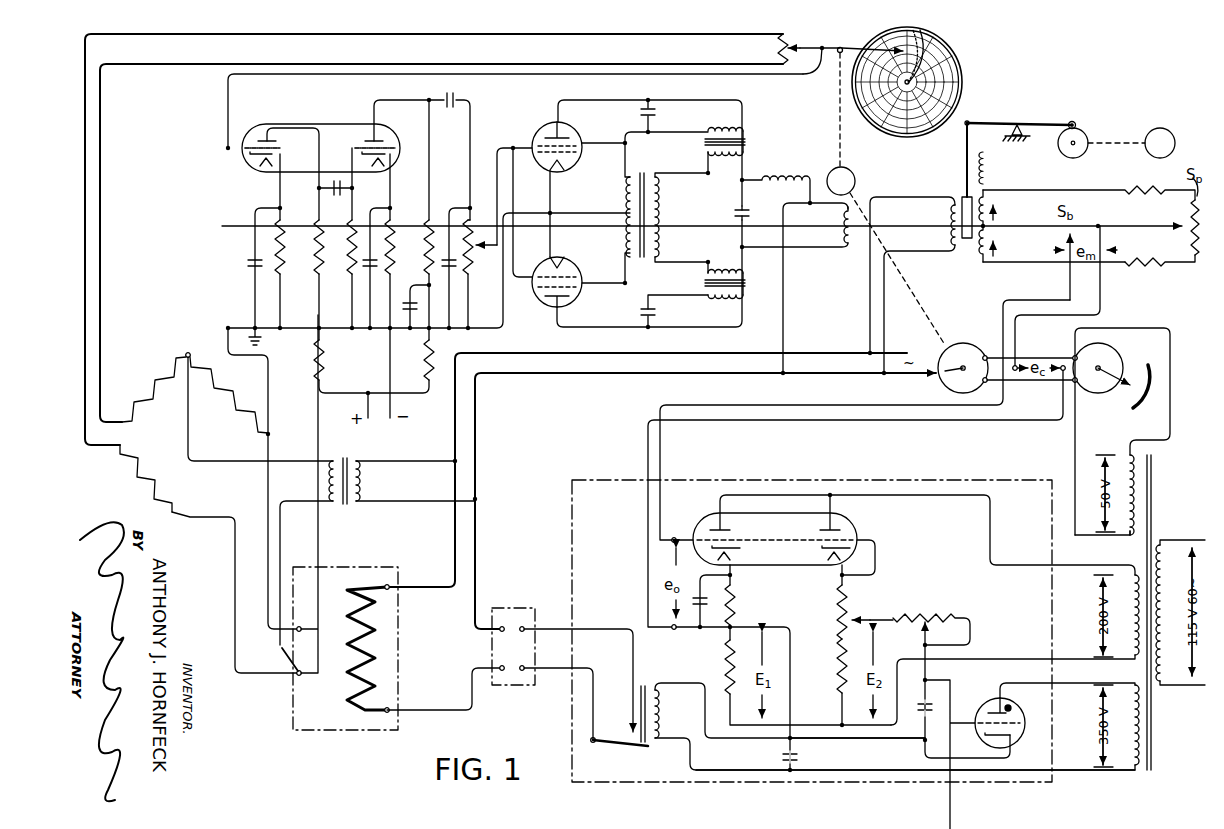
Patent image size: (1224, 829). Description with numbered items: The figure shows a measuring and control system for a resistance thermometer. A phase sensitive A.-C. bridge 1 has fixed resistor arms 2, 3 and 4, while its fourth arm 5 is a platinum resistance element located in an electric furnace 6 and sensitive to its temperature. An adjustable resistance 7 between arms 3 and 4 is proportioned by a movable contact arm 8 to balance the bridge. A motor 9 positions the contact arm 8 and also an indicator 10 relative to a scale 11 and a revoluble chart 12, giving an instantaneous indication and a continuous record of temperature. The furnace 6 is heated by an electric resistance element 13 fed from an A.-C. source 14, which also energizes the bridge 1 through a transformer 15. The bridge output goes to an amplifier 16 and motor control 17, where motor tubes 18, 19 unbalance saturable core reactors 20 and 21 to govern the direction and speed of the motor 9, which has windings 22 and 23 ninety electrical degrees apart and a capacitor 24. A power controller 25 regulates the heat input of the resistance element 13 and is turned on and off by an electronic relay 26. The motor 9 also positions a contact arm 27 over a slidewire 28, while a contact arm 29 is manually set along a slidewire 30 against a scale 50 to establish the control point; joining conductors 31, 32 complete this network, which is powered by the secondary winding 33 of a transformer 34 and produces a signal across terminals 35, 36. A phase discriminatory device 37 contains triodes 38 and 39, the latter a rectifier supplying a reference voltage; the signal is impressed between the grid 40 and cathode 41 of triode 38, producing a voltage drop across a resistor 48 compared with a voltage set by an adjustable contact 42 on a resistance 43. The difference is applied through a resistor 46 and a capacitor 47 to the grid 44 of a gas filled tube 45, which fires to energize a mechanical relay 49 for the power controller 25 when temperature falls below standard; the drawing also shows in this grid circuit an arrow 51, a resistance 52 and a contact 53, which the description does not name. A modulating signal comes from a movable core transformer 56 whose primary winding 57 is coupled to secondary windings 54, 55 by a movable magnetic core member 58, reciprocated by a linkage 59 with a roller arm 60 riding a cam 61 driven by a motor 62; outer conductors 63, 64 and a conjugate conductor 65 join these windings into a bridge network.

The phase sensitive A.-C. bridge 1 is at (170, 437).
The fixed resistor arm 2 is at (220, 374).
The fixed resistor arm 3 is at (150, 393).
The fixed resistor arm 4 is at (134, 474).
The fourth arm 5 is at (322, 672).
The electric furnace 6 is at (341, 566).
The adjustable resistance 7 is at (776, 40).
The movable contact arm 8 is at (823, 46).
The motor 9 is at (872, 161).
The indicator 10 is at (845, 46).
The scale 11 is at (937, 52).
The revoluble chart 12 is at (958, 80).
The electric resistance element 13 is at (347, 616).
The A.-C. source 14 is at (537, 355).
The transformer 15 is at (377, 541).
The amplifier 16 is at (321, 137).
The motor control 17 is at (649, 203).
The motor tube 18 is at (540, 305).
The motor tube 19 is at (542, 126).
The saturable core reactor 20 is at (737, 283).
The saturable core reactor 21 is at (737, 141).
The motor winding 22 is at (781, 173).
The motor winding 23 is at (840, 216).
The capacitor 24 is at (738, 210).
The power controller 25 is at (508, 606).
The electronic relay 26 is at (571, 516).
The contact arm 27 is at (969, 378).
The slidewire 28 is at (942, 383).
The contact arm 29 is at (1097, 378).
The slidewire 30 is at (1114, 352).
The joining conductor 31 is at (988, 355).
The joining conductor 32 is at (1020, 384).
The secondary winding 33 is at (1131, 536).
The transformer 34 is at (1178, 528).
The terminal 35 is at (672, 538).
The terminal 36 is at (726, 697).
The phase discriminatory device 37 is at (768, 566).
The triode 38 is at (708, 497).
The triode 39 is at (876, 511).
The grid 40 is at (736, 541).
The cathode 41 is at (742, 552).
The adjustable contact 42 is at (871, 615).
The resistance 43 is at (829, 623).
The grid 44 is at (1008, 705).
The gas filled tube 45 is at (1015, 742).
The resistor 46 is at (953, 697).
The capacitor 47 is at (916, 710).
The resistor 48 is at (727, 661).
The mechanical relay 49 is at (863, 715).
The scale 50 is at (1135, 408).
The slider 51 is at (920, 639).
The resistor 52 is at (934, 608).
The contact 53 is at (932, 643).
The secondary winding 54 is at (994, 209).
The secondary winding 55 is at (993, 238).
The movable core transformer 56 is at (1041, 267).
The primary winding 57 is at (944, 214).
The movable magnetic core member 58 is at (962, 195).
The linkage 59 is at (990, 122).
The roller arm 60 is at (1071, 120).
The cam 61 is at (1058, 151).
The motor 62 is at (1160, 127).
The outer conductor 63 is at (1084, 190).
The outer conductor 64 is at (1112, 268).
The conjugate conductor 65 is at (1124, 225).